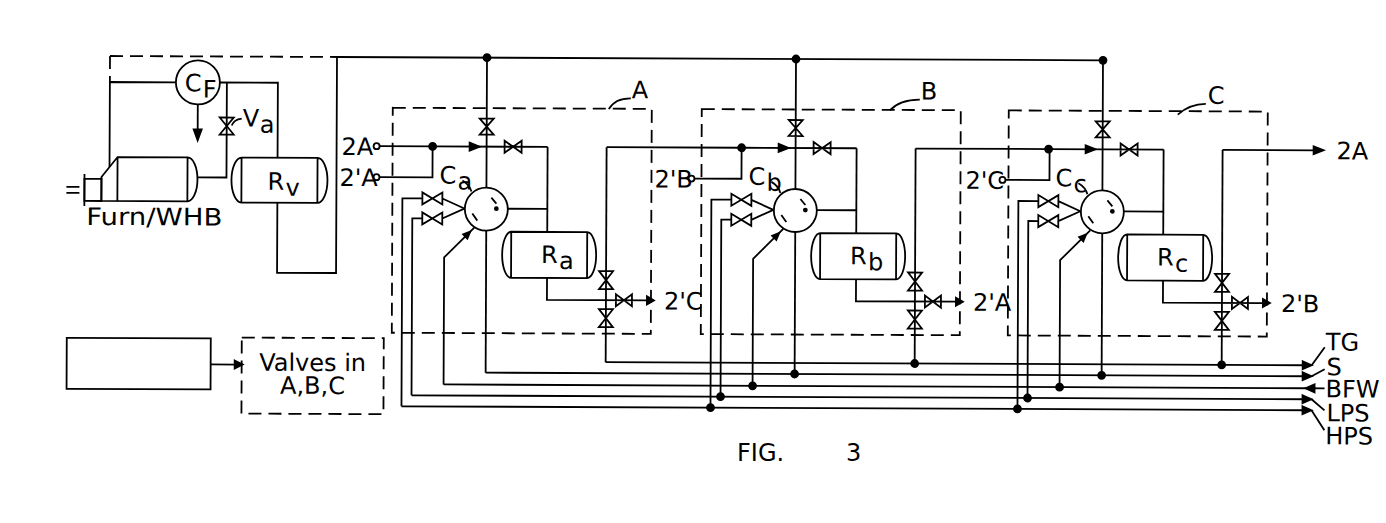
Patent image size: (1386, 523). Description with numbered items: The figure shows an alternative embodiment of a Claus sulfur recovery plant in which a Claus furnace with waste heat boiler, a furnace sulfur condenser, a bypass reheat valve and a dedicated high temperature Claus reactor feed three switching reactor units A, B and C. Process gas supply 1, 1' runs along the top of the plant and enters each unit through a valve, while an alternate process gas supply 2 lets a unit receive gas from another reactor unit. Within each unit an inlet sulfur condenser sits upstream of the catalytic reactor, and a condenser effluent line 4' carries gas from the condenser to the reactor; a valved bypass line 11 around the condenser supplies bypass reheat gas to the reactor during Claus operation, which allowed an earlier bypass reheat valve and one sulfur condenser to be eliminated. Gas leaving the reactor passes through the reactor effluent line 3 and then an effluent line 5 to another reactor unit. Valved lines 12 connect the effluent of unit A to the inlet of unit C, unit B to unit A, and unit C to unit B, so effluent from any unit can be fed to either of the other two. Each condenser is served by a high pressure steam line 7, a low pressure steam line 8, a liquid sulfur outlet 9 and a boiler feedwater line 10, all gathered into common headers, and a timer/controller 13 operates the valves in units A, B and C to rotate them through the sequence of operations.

The process gas supply 1 is at (811, 122).
The process gas supply 1' is at (720, 40).
The alternate process gas supply 2 is at (412, 146).
The reactor effluent line 3 is at (547, 297).
The condenser effluent line 4' is at (835, 195).
The effluent line to another reactor unit 5 is at (607, 176).
The high pressure steam line 7 is at (403, 276).
The low pressure steam line 8 is at (414, 246).
The liquid sulfur outlet 9 is at (488, 322).
The boiler feedwater line 10 is at (447, 302).
The valved bypass line 11 is at (549, 166).
The valved line 12 is at (614, 296).
The timer/controller 13 is at (162, 339).